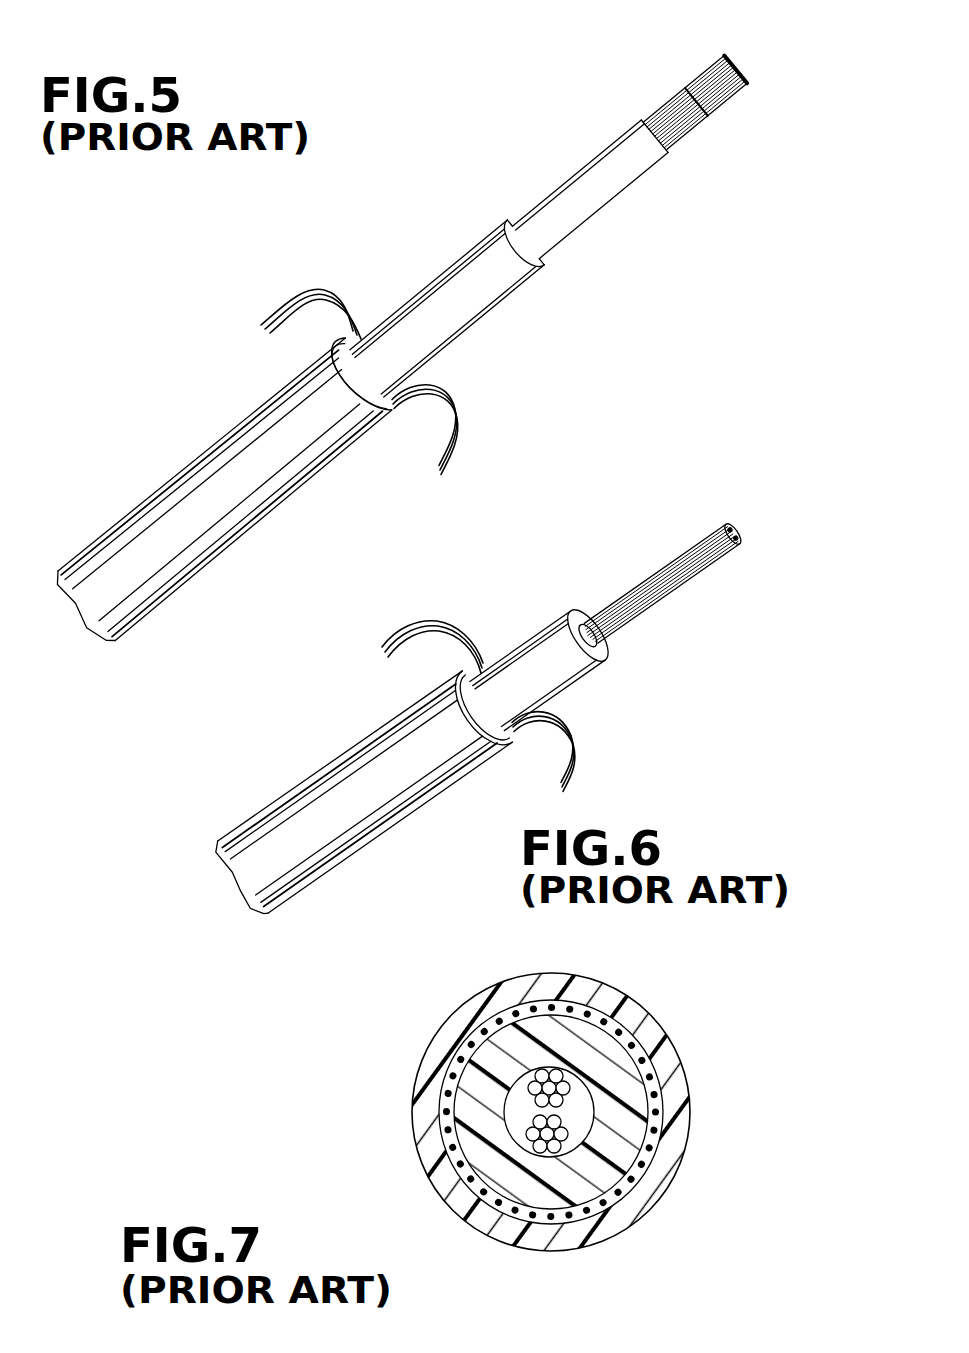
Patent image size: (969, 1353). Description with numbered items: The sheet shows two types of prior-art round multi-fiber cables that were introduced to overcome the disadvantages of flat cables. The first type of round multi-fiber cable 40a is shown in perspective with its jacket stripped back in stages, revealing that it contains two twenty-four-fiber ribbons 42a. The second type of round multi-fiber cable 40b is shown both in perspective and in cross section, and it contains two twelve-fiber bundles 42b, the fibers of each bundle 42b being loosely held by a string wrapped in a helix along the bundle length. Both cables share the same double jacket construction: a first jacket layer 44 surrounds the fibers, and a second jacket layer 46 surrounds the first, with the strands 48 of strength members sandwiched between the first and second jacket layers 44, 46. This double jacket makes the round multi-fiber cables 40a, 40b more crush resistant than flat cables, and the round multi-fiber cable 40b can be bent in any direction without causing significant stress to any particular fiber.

In FIG. 5, the round multi-fiber cable 40a is at (514, 170).
In FIG. 6, the round multi-fiber cable 40b is at (317, 745).
In FIG. 7, the round multi-fiber cable 40b is at (408, 1082).
In FIG. 5, the 24-fiber ribbon 42a is at (727, 60).
In FIG. 6, the 12-fiber bundle 42b is at (650, 556).
In FIG. 7, the 12-fiber bundle 42b is at (585, 1090).
In FIG. 5, the first jacket layer 44 is at (494, 315).
In FIG. 6, the first jacket layer 44 is at (560, 683).
In FIG. 7, the first jacket layer 44 is at (583, 1180).
In FIG. 5, the second jacket layer 46 is at (296, 491).
In FIG. 6, the second jacket layer 46 is at (351, 833).
In FIG. 7, the second jacket layer 46 is at (666, 1152).
In FIG. 5, the strands of strength members 48 is at (338, 292).
In FIG. 6, the strands of strength members 48 is at (440, 623).
In FIG. 7, the strands of strength members 48 is at (500, 1017).